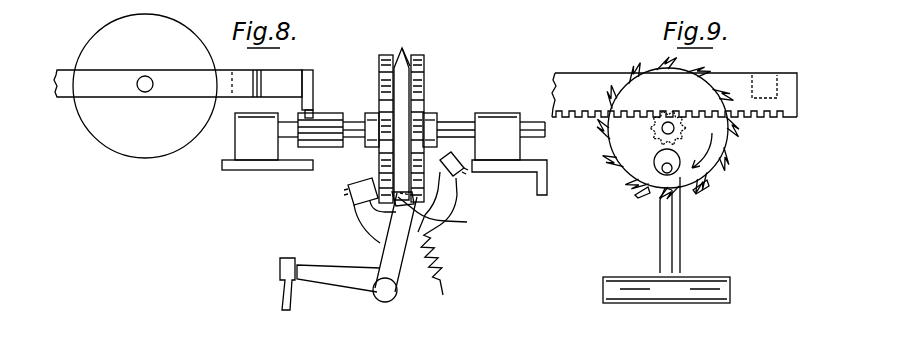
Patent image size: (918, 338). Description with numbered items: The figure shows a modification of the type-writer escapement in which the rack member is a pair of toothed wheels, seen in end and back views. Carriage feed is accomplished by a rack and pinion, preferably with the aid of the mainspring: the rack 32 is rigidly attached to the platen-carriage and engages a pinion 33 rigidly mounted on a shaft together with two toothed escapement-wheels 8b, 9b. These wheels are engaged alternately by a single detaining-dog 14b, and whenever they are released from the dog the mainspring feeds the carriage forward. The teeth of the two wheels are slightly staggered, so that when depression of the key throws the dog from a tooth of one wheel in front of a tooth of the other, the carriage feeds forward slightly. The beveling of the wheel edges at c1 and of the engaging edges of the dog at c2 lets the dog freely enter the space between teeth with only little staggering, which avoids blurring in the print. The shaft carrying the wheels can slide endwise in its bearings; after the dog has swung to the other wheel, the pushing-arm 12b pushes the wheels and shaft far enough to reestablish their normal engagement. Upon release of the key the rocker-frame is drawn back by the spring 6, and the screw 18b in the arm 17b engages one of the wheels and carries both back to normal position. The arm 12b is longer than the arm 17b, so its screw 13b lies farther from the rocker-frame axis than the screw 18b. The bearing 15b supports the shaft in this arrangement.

In FIG. 8, the rack 32 is at (313, 110).
In FIG. 9, the rack 32 is at (763, 117).
In FIG. 8, the pinion 33 is at (320, 142).
In FIG. 8, the toothed escapement-wheel 9b is at (379, 104).
In FIG. 9, the toothed escapement-wheel 9b is at (625, 72).
In FIG. 8, the toothed escapement-wheel 8b is at (418, 112).
In FIG. 9, the toothed escapement-wheel 8b is at (635, 192).
In FIG. 8, the beveling of the escapement-wheel edges c1 is at (402, 48).
In FIG. 8, the bearing 15b is at (492, 117).
In FIG. 8, the screw 18b is at (348, 197).
In FIG. 8, the arm 17b is at (365, 220).
In FIG. 8, the screw 13b is at (464, 170).
In FIG. 8, the pushing-arm 12b is at (455, 190).
In FIG. 8, the beveling of the dog edges c2 is at (443, 211).
In FIG. 8, the detaining-dog 14b is at (395, 229).
In FIG. 9, the detaining-dog 14b is at (663, 235).
In FIG. 8, the spring 6 is at (439, 265).